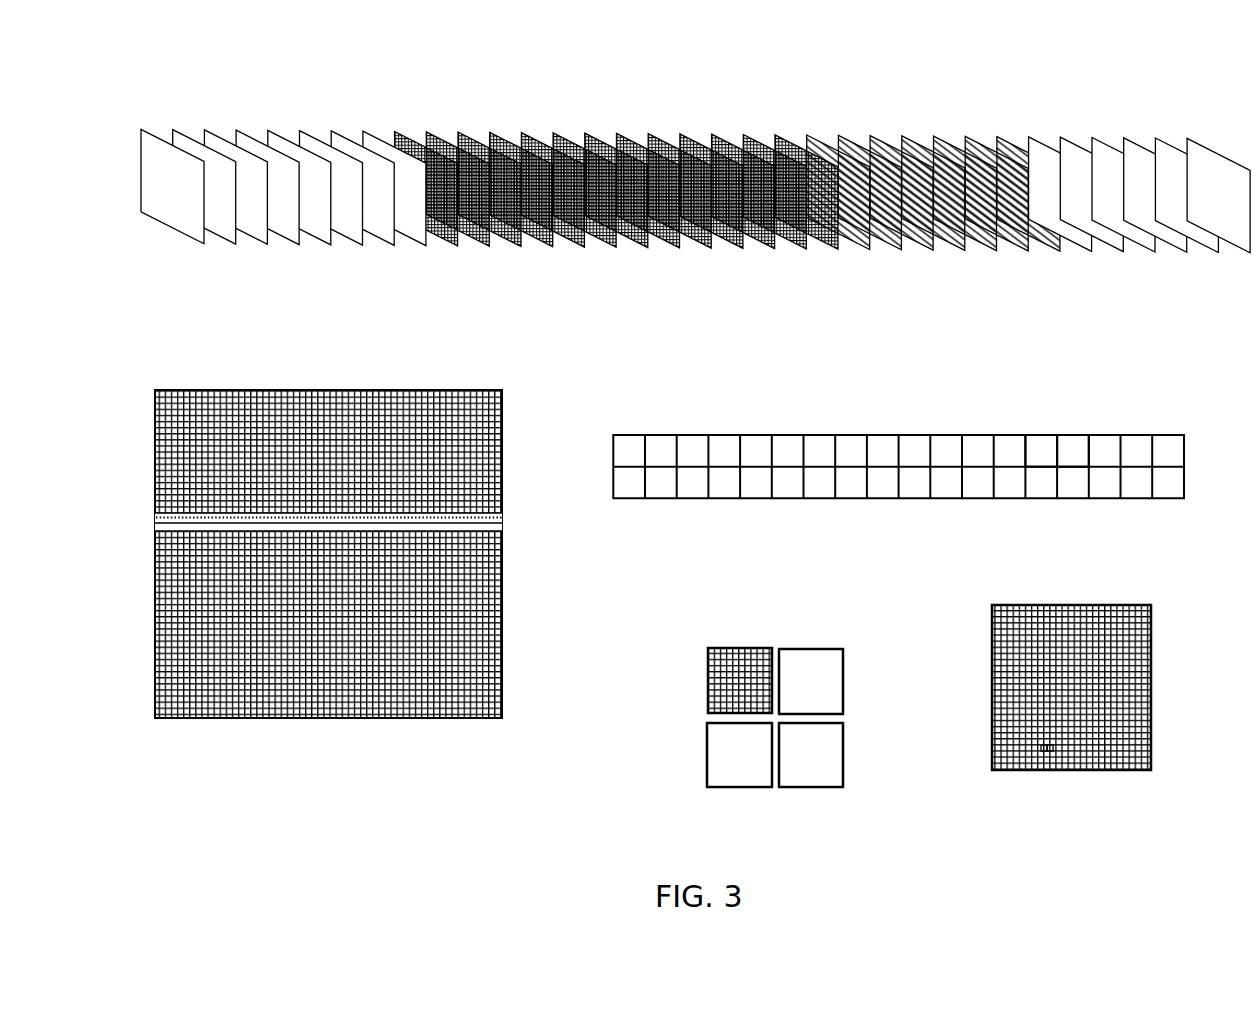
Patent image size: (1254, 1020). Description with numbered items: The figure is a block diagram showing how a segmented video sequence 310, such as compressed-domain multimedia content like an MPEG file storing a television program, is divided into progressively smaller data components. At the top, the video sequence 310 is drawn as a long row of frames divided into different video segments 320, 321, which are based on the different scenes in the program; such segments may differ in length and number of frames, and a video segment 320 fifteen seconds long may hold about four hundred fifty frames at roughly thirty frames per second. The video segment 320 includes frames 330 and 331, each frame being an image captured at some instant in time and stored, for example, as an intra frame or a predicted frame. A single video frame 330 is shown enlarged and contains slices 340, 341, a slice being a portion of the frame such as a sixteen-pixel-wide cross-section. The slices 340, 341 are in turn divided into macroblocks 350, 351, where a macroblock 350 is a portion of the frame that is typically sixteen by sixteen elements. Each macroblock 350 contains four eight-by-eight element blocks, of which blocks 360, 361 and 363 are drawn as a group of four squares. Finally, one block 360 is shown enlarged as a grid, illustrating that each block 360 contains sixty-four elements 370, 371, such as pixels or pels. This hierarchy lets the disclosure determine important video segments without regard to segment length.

The segmented video sequence 310 is at (695, 371).
The video segment 320 is at (760, 128).
The video segment 321 is at (958, 128).
The video frame 330 is at (510, 230).
The video frame 331 is at (544, 230).
The slice 340 is at (495, 520).
The slice 341 is at (495, 530).
The macroblock 350 is at (1038, 458).
The macroblock 351 is at (1075, 458).
The block 360 is at (731, 665).
The block 361 is at (816, 666).
The block 363 is at (724, 754).
The element 370 is at (1048, 750).
The element 371 is at (1053, 752).